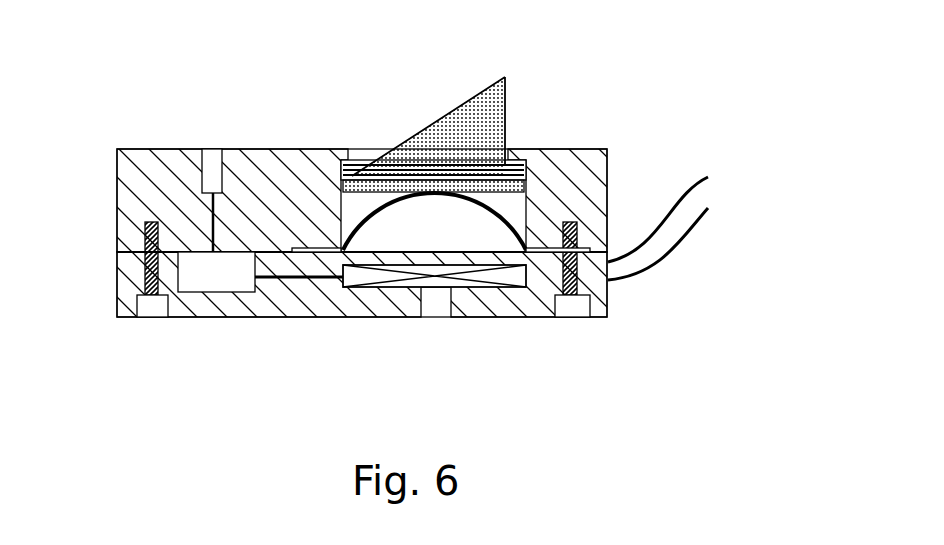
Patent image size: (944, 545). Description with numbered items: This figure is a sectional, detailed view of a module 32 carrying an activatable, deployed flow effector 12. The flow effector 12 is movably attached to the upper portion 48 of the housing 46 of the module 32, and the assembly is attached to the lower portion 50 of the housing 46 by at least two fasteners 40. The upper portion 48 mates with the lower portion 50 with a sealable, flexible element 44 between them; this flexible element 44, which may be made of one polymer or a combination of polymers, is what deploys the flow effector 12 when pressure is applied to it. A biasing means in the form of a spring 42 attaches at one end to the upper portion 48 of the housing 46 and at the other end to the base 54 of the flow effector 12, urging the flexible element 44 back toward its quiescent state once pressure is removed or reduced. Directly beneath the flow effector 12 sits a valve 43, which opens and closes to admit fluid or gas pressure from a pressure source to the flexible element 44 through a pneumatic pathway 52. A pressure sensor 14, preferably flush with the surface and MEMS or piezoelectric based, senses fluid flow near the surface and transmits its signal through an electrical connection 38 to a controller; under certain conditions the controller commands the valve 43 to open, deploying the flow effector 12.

The flow effector 12 is at (448, 118).
The pressure sensor 14 is at (208, 149).
The module 32 is at (115, 205).
The electrical connection 38 is at (216, 228).
The fasteners 40 is at (148, 318).
The biasing means (spring) 42 is at (217, 293).
The valve 43 is at (487, 293).
The sealable, flexible element 44 is at (523, 226).
The housing 46 is at (162, 172).
The upper portion of the housing 48 is at (330, 145).
The lower portion of the housing 50 is at (350, 305).
The pneumatic pathway 52 is at (708, 195).
The base of flow effector 54 is at (530, 185).